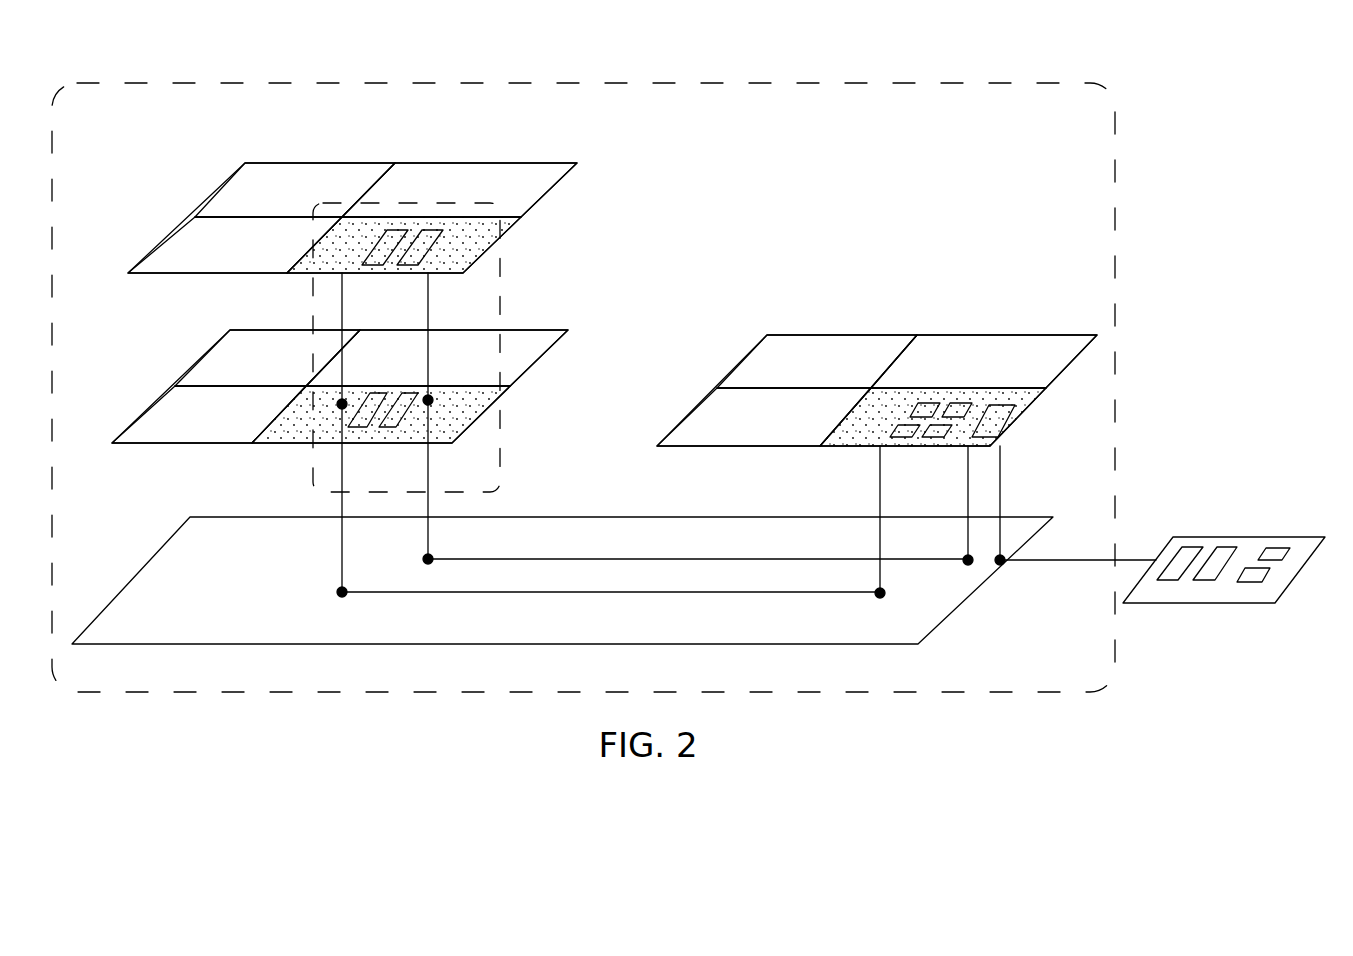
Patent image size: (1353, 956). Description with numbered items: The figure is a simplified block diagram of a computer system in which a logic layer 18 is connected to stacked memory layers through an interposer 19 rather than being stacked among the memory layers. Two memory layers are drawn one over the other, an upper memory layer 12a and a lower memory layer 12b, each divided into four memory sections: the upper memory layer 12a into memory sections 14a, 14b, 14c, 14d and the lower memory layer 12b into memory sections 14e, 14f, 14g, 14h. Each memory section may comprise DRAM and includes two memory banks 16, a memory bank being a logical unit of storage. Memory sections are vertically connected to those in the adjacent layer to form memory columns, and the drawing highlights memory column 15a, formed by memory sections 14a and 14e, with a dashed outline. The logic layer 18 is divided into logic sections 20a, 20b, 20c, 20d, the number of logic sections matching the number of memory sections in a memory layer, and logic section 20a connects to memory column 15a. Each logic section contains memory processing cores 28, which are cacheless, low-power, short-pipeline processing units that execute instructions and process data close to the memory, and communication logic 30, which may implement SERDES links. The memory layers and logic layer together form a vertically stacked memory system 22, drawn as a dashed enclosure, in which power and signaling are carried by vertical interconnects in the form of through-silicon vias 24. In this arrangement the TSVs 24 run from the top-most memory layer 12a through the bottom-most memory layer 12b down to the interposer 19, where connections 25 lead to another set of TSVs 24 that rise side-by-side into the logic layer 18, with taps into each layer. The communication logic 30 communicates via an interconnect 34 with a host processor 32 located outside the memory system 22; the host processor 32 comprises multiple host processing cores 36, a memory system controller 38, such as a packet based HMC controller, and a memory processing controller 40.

The upper memory layer 12a is at (389, 217).
The lower memory layer 12b is at (381, 365).
The memory section 14a is at (475, 247).
The memory section 14b is at (515, 178).
The memory section 14c is at (330, 181).
The memory section 14d is at (195, 260).
The memory section 14e is at (465, 412).
The memory section 14f is at (523, 340).
The memory section 14g is at (268, 348).
The memory section 14h is at (160, 422).
The memory column 15a is at (500, 400).
The memory bank 16 is at (400, 237).
The logic layer 18 is at (879, 350).
The interposer 19 is at (205, 569).
The logic section 20a is at (852, 435).
The logic section 20b is at (1053, 357).
The logic section 20c is at (827, 353).
The logic section 20d is at (755, 432).
The vertically stacked memory system 22 is at (998, 83).
The through-silicon vias 24 is at (343, 320).
The connections 25 is at (493, 558).
The memory processing core 28 is at (957, 403).
The communication logic 30 is at (990, 422).
The host processor 32 is at (1237, 572).
The interconnect 34 is at (1043, 567).
The host processing cores 36 is at (1270, 575).
The memory system controller 38 is at (1163, 582).
The memory processing controller 40 is at (1200, 580).